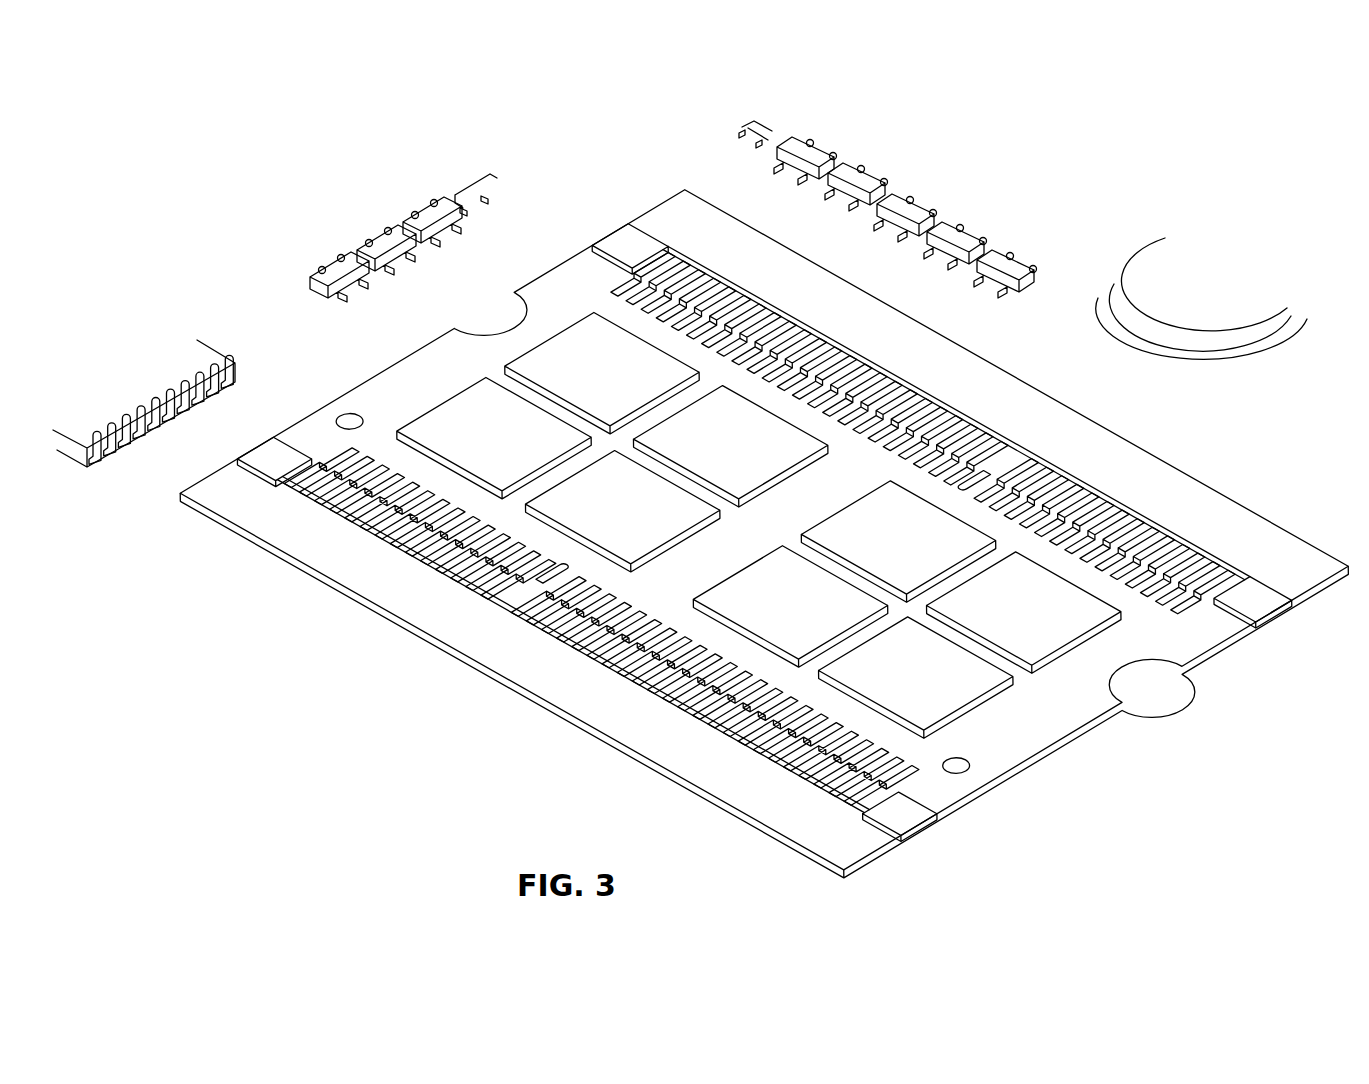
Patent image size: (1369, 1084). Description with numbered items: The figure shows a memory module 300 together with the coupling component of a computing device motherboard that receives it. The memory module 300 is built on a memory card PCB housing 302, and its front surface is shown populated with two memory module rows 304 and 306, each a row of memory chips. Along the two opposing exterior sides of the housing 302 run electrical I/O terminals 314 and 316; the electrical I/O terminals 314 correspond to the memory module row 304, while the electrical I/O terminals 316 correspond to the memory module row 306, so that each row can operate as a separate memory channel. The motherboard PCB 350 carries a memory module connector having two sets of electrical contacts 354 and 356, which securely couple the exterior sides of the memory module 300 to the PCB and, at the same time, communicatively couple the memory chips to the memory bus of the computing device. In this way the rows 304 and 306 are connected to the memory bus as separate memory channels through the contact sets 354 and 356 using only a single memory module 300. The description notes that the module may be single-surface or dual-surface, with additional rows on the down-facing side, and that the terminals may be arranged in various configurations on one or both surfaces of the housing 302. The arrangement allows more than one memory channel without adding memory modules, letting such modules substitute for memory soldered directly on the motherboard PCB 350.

The memory module 300 is at (1139, 698).
The memory card PCB housing 302 is at (395, 400).
The memory module row 304 is at (1015, 585).
The memory module row 306 is at (892, 661).
The electrical I/O terminals 314 is at (1020, 520).
The electrical I/O terminals 316 is at (785, 745).
The motherboard PCB 350 is at (617, 158).
The electrical contact set 354 is at (1180, 540).
The electrical contact set 356 is at (282, 487).